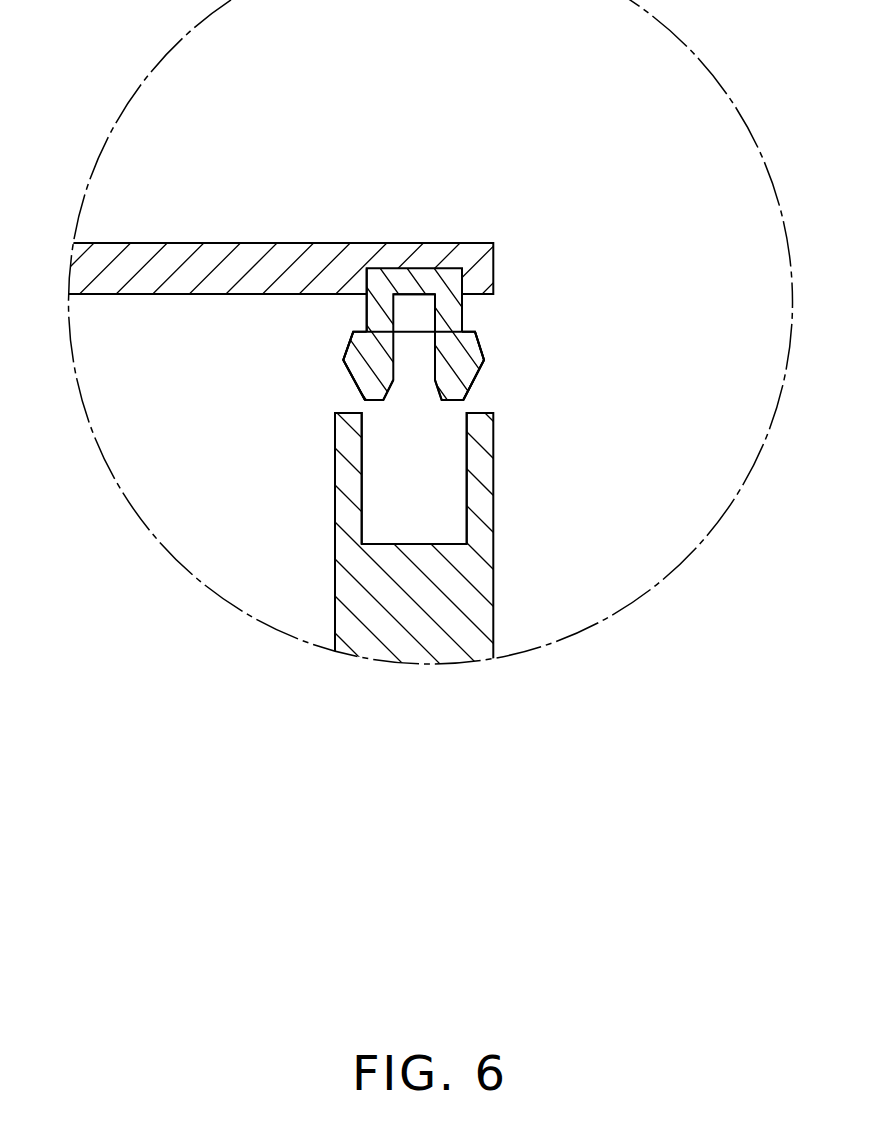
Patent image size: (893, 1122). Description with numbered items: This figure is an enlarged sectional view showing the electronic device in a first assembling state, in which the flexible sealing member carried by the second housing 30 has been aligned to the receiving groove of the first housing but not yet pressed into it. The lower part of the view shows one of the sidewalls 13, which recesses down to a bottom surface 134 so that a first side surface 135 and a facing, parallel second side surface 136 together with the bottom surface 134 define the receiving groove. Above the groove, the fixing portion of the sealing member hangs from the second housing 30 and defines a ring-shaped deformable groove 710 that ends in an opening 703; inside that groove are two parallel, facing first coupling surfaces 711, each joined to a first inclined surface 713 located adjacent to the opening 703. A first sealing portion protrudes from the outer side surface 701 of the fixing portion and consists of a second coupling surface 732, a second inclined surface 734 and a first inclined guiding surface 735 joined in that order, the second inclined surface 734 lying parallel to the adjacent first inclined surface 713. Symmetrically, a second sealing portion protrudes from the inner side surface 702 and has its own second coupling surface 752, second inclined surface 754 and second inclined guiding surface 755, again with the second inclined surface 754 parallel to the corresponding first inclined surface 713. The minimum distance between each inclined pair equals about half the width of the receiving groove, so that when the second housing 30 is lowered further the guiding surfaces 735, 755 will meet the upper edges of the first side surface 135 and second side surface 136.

The sidewall 13 is at (362, 607).
The second housing 30 is at (265, 270).
The bottom surface 134 is at (418, 545).
The first side surface 135 is at (467, 514).
The second side surface 136 is at (361, 517).
The outer side surface 701 is at (462, 325).
The inner side surface 702 is at (345, 298).
The opening 703 is at (410, 388).
The deformable groove 710 is at (409, 325).
The first coupling surface 711 is at (433, 330).
The first inclined surface 713 is at (433, 388).
The second coupling surface 732 is at (474, 329).
The second inclined surface 734 is at (480, 348).
The first inclined guiding surface 735 is at (480, 368).
The second coupling surface 752 is at (360, 328).
The second inclined surface 754 is at (343, 351).
The second inclined guiding surface 755 is at (360, 380).